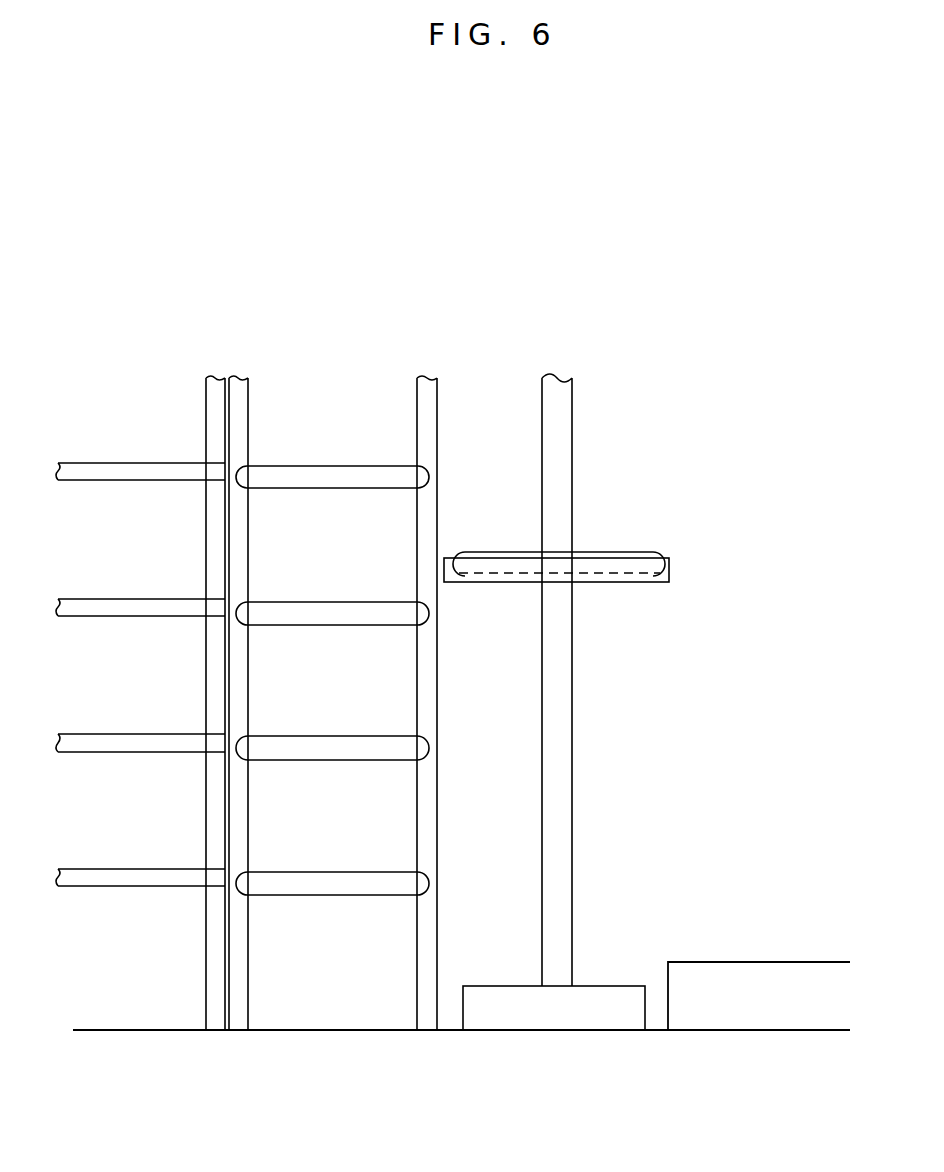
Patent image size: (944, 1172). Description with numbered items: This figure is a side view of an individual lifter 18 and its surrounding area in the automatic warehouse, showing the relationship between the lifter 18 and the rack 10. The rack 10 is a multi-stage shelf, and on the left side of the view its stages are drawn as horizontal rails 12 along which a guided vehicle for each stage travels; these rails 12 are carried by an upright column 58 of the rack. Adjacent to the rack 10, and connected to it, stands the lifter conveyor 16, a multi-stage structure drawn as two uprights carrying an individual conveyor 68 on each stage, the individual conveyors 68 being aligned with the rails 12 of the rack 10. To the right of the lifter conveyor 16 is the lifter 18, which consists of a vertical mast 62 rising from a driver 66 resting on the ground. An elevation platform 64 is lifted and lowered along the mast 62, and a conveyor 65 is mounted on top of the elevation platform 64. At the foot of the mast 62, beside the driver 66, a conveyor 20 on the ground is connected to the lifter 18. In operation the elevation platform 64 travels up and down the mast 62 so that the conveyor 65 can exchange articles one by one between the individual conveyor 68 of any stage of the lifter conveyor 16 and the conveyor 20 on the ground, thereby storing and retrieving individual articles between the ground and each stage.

The rack 10 is at (140, 735).
The rail 12 is at (135, 471).
The lifter conveyor 16 is at (333, 735).
The lifter 18 is at (556, 734).
The conveyor 20 is at (750, 970).
The support column 58 is at (206, 678).
The mast 62 is at (565, 773).
The elevation platform 64 is at (635, 585).
The conveyor 65 is at (606, 550).
The driver 66 is at (598, 995).
The individual conveyor 68 is at (363, 492).